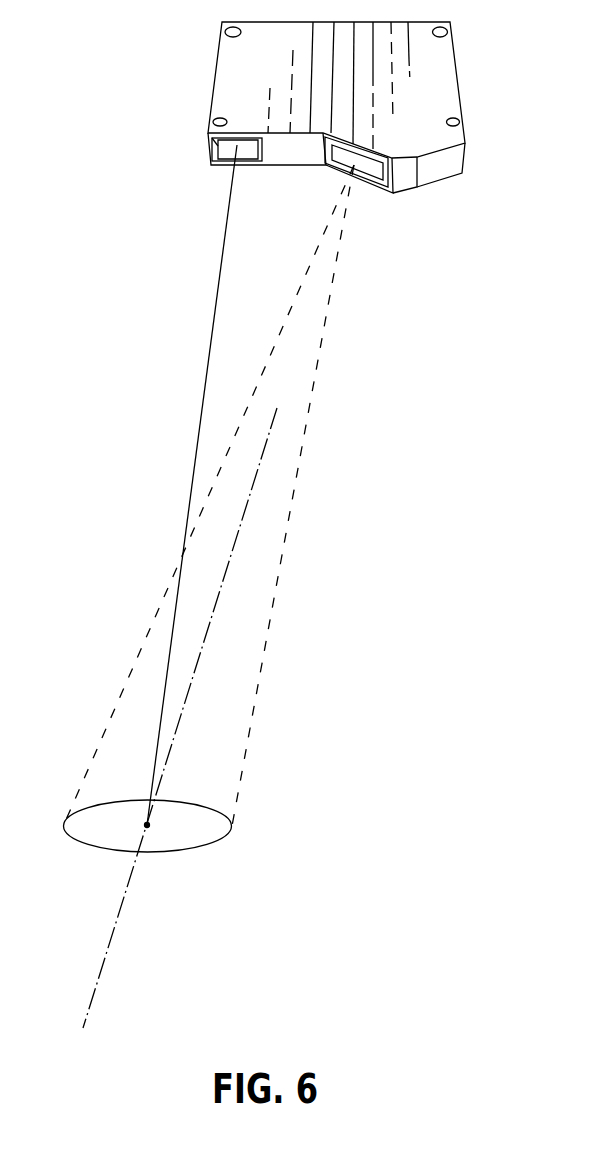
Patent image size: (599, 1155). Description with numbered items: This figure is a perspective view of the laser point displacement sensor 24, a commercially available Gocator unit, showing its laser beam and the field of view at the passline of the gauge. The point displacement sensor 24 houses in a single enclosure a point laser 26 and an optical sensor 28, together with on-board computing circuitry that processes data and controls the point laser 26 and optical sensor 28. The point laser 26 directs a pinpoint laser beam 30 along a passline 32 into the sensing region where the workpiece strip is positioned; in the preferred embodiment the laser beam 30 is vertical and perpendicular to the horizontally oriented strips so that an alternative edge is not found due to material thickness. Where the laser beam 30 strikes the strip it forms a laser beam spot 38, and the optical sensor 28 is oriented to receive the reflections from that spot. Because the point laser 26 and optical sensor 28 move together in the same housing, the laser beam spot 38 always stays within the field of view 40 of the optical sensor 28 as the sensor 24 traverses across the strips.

The point displacement sensor 24 is at (437, 60).
The point laser 26 is at (225, 160).
The optical sensor 28 is at (367, 170).
The laser beam 30 is at (213, 297).
The passline 32 is at (118, 923).
The laser beam spot 38 is at (143, 850).
The field of view 40 is at (227, 837).